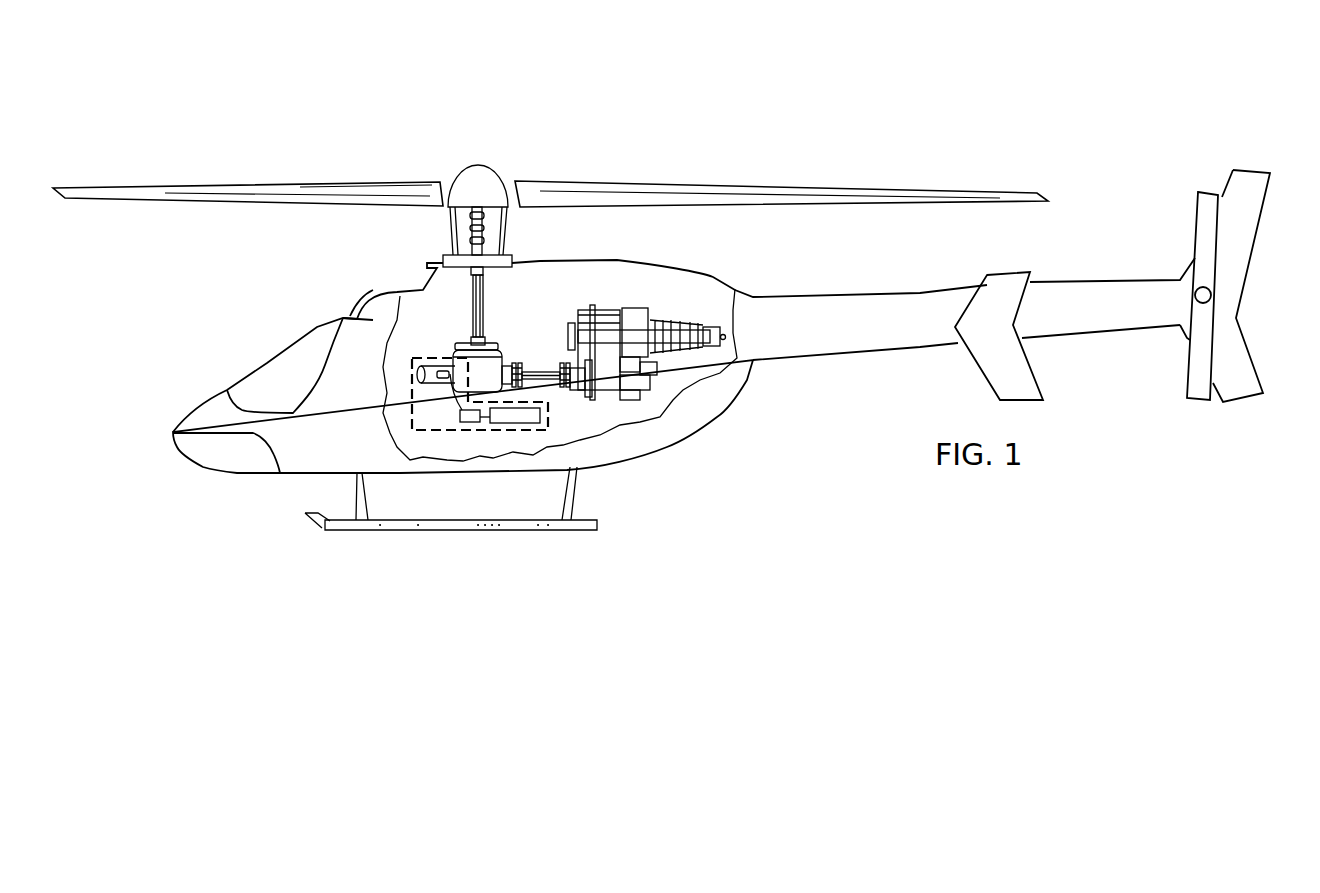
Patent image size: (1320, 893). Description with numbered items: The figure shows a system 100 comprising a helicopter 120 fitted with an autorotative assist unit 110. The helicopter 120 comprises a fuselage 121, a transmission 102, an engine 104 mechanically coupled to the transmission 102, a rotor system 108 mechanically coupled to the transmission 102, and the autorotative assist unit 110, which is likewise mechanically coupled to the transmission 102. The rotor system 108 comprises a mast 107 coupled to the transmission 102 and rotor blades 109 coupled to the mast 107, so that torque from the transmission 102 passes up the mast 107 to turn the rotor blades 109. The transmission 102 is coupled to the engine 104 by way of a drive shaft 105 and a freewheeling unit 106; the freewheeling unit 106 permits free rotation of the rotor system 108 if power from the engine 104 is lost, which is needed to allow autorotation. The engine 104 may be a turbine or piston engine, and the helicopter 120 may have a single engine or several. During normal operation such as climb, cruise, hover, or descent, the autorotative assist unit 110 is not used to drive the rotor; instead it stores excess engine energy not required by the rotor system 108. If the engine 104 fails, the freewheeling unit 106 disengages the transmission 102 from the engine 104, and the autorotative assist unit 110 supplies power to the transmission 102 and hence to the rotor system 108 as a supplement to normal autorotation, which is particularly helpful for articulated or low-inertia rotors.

The system 100 is at (818, 82).
The transmission 102 is at (508, 329).
The engine 104 is at (624, 417).
The drive shaft 105 is at (541, 371).
The freewheeling unit 106 is at (591, 395).
The mast 107 is at (473, 300).
The rotor system 108 is at (528, 231).
The rotor blades 109 is at (196, 188).
The autorotative assist unit 110 is at (411, 406).
The helicopter 120 is at (708, 425).
The fuselage 121 is at (268, 476).